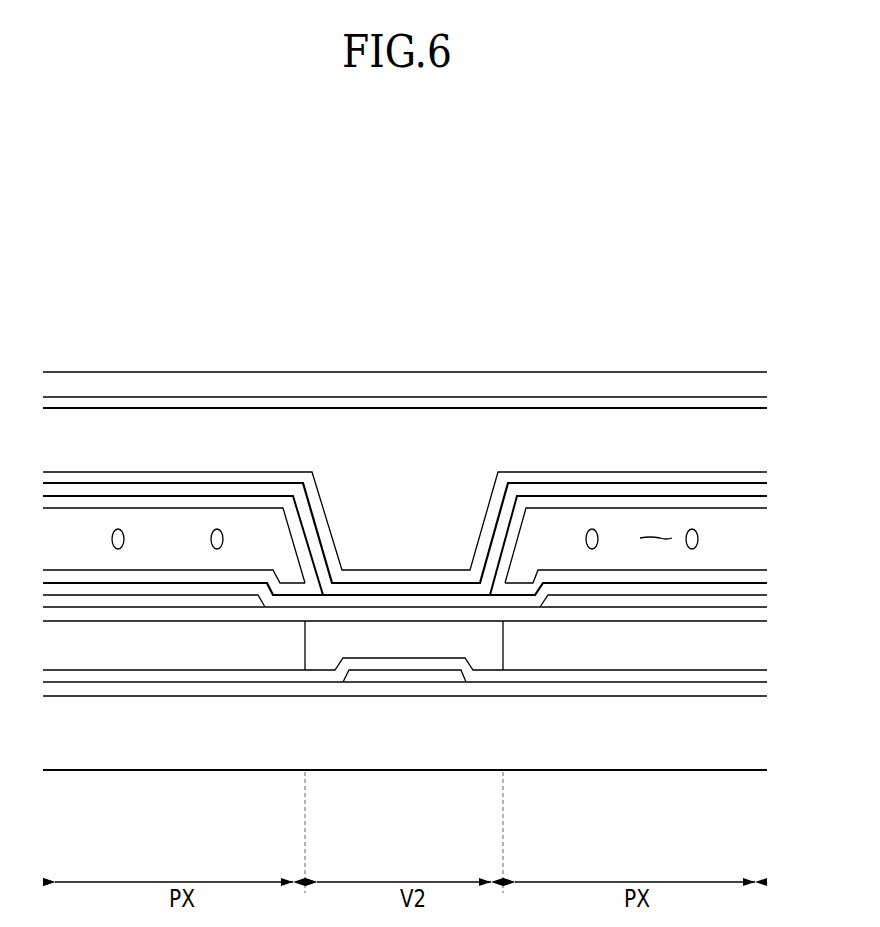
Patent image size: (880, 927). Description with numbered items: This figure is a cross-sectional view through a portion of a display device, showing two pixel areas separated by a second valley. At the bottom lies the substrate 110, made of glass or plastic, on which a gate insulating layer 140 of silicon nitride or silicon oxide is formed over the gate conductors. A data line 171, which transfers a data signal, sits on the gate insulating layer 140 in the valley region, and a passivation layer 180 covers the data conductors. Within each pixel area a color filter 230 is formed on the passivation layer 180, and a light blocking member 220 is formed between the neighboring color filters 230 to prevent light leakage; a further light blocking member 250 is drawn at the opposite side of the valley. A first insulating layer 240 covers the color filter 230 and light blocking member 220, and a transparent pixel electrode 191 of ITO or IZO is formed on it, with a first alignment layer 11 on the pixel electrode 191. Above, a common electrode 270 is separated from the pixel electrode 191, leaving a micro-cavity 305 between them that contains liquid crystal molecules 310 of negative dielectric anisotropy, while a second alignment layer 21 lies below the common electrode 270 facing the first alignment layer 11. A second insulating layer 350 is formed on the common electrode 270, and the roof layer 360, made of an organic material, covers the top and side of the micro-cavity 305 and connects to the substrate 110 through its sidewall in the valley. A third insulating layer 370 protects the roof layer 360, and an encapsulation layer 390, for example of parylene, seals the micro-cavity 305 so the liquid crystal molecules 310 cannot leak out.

The first alignment layer 11 is at (712, 575).
The second alignment layer 21 is at (148, 502).
The substrate 110 is at (79, 737).
The gate insulating layer 140 is at (137, 688).
The data line 171 is at (392, 675).
The passivation layer 180 is at (197, 675).
The pixel electrode 191 is at (662, 600).
The light blocking member 220 is at (324, 651).
The color filter 230 is at (258, 652).
The first insulating layer 240 is at (438, 612).
The light blocking member 250 is at (522, 600).
The common electrode 270 is at (215, 488).
The micro-cavity 305 is at (655, 537).
The liquid crystal molecules 310 is at (700, 538).
The second insulating layer 350 is at (577, 480).
The roof layer 360 is at (401, 435).
The third insulating layer 370 is at (302, 400).
The encapsulation layer 390 is at (479, 385).